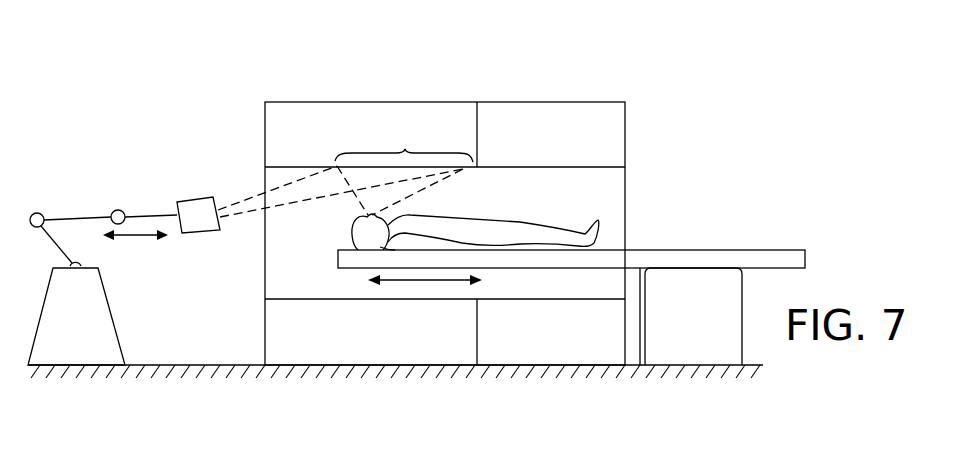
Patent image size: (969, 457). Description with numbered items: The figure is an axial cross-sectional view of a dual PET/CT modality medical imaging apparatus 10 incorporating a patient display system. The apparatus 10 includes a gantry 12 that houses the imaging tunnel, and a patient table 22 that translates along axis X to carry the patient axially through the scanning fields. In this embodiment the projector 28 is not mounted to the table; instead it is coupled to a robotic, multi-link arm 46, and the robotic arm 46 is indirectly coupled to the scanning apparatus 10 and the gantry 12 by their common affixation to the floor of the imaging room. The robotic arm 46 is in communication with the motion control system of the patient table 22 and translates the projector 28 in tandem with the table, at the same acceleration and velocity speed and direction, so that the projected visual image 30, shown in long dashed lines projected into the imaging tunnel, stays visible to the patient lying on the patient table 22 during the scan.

The imaging apparatus 10 is at (600, 63).
The gantry 12 is at (440, 98).
The patient table 22 is at (365, 268).
The projector 28 is at (197, 222).
The visual image 30 is at (345, 169).
The robotic arm 46 is at (72, 218).